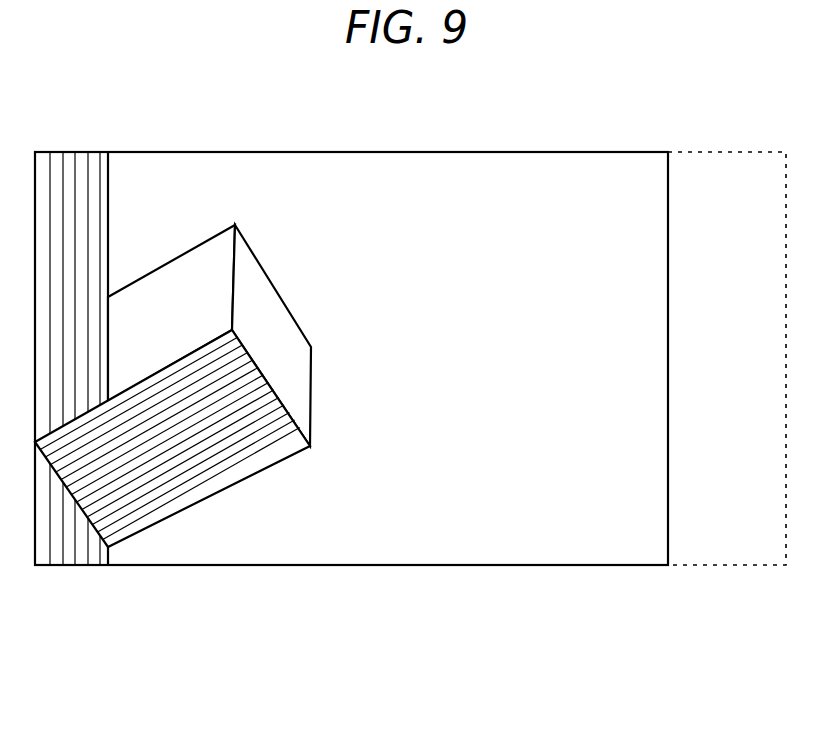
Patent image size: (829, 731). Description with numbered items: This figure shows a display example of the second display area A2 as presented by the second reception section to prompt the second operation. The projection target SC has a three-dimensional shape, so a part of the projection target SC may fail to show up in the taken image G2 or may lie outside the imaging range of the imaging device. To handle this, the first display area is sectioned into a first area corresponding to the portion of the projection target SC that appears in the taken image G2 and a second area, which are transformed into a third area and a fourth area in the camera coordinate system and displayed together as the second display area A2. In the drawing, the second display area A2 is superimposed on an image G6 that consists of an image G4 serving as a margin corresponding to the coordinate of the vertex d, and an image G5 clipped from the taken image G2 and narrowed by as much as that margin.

The projection target SC is at (160, 267).
The second display area A2 is at (223, 492).
The taken image G2 is at (787, 145).
The image as a margin G4 is at (107, 577).
The image clipped from the taken image G5 is at (668, 577).
The image consisting of margin and clipped image G6 is at (177, 638).